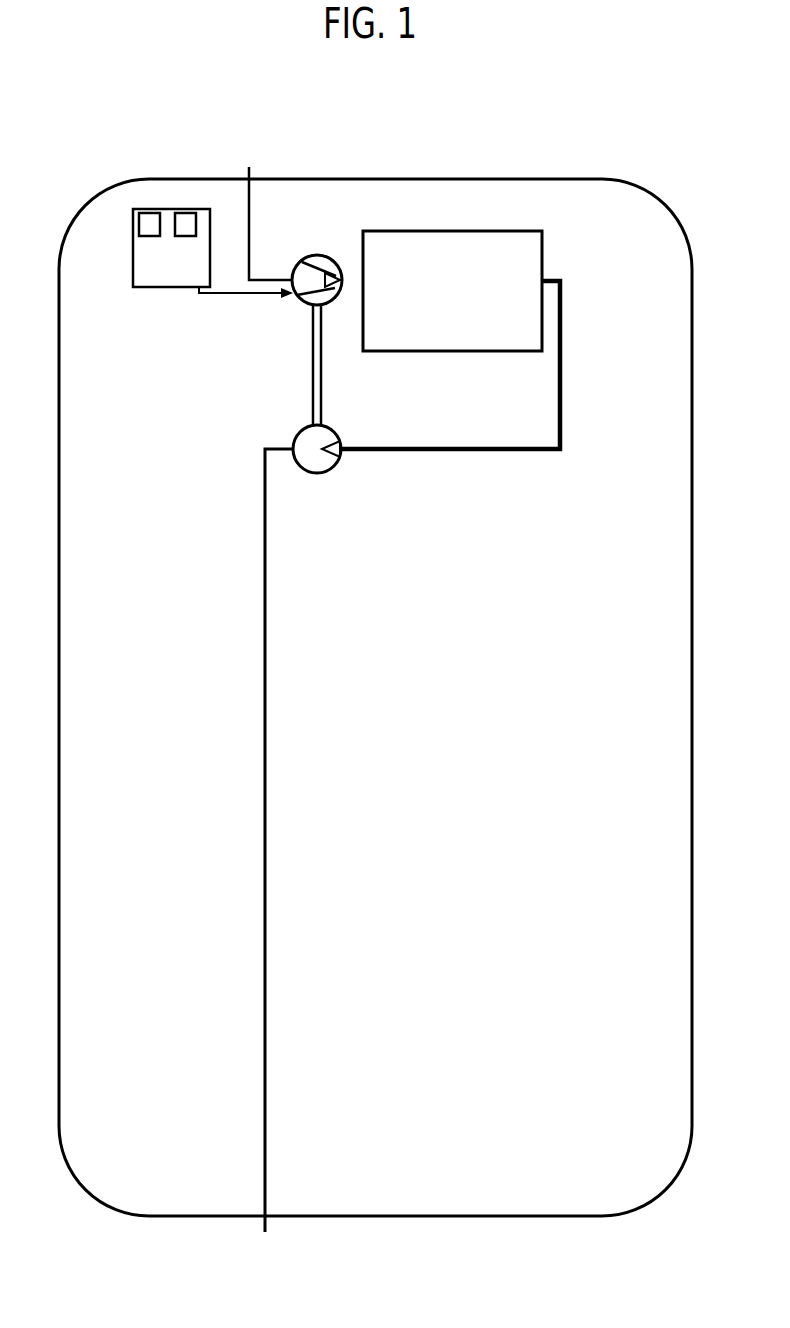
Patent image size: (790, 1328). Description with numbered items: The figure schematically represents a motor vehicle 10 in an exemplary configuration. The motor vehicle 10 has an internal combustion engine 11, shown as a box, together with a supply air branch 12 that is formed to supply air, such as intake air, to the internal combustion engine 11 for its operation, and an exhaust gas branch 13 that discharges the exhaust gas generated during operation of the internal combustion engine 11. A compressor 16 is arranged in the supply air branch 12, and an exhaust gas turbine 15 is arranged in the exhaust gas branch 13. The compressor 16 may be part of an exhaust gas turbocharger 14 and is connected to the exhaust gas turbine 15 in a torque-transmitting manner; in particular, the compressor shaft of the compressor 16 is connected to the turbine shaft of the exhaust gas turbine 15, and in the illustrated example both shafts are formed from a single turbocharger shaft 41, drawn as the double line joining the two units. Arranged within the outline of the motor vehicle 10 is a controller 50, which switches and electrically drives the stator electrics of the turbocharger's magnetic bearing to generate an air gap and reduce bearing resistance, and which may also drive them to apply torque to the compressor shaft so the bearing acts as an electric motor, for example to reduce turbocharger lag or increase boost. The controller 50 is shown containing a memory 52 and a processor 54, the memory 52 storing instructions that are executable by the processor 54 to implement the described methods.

The motor vehicle 10 is at (189, 340).
The internal combustion engine 11 is at (463, 300).
The supply air branch 12 is at (246, 202).
The exhaust gas branch 13 is at (565, 415).
The exhaust gas turbocharger 14 is at (247, 365).
The exhaust gas turbine 15 is at (333, 470).
The compressor 16 is at (313, 256).
The turbocharger shaft 41 is at (312, 385).
The controller 50 is at (143, 272).
The memory 52 is at (147, 224).
The processor 54 is at (183, 222).